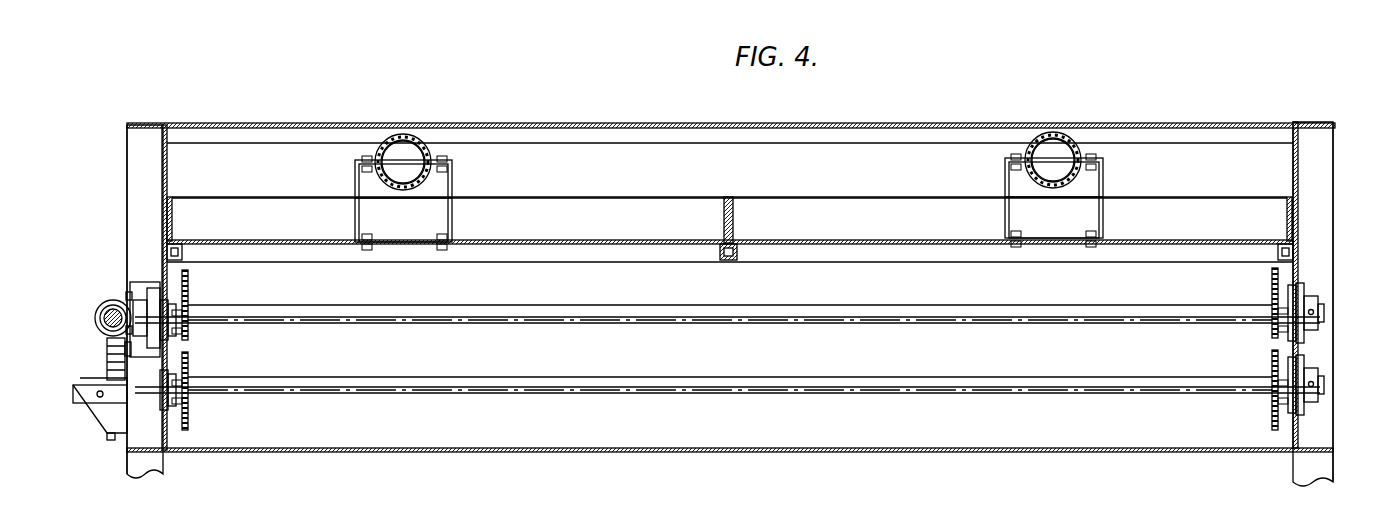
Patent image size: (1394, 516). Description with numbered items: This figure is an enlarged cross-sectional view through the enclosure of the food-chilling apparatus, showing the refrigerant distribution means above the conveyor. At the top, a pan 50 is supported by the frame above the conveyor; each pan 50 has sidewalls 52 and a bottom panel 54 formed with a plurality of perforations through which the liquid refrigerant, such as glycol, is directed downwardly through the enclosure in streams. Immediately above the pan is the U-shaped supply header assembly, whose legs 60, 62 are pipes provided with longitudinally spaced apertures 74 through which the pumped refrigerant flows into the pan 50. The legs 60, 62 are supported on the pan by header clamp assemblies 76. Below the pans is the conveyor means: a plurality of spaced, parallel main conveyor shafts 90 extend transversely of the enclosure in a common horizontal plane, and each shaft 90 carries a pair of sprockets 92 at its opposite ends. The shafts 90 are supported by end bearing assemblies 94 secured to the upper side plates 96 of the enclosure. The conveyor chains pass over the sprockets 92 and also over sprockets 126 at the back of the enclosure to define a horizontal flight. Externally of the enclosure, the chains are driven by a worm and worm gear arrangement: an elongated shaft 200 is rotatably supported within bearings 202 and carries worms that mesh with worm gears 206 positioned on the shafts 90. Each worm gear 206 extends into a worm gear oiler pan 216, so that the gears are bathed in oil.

The pan 50 is at (232, 194).
The sidewalls 52 is at (622, 208).
The bottom panel 54 is at (582, 240).
The leg 60 is at (1044, 132).
The leg 62 is at (393, 135).
The apertures 74 is at (405, 186).
The header clamp assemblies 76 is at (352, 214).
The main conveyor shafts 90 is at (476, 353).
The sprockets 92 is at (189, 376).
The end bearing assemblies 94 is at (1316, 362).
The upper side plates 96 is at (163, 228).
The sprockets 126 is at (189, 294).
The elongated shaft 200 is at (113, 314).
The bearings 202 is at (101, 304).
The worm gears 206 is at (107, 350).
The worm gear oiler pan 216 is at (80, 404).